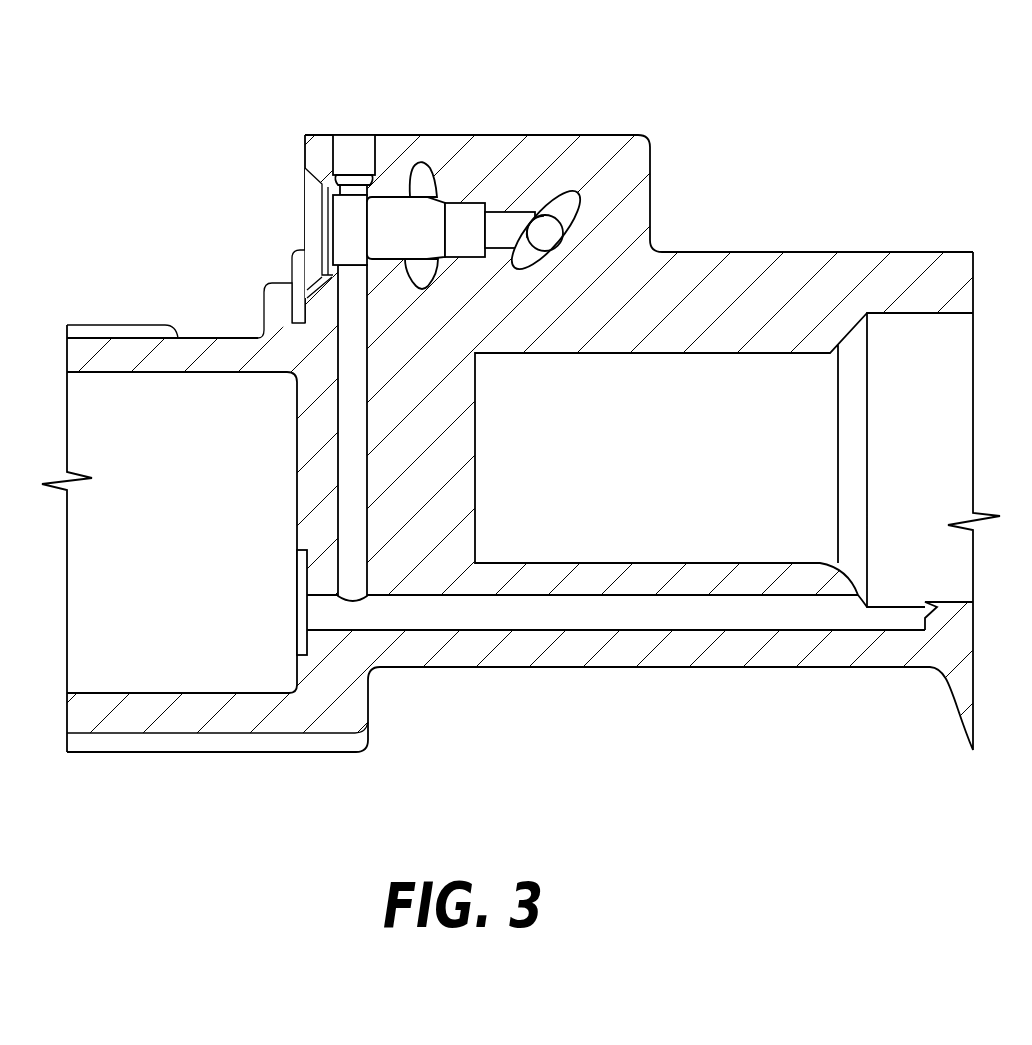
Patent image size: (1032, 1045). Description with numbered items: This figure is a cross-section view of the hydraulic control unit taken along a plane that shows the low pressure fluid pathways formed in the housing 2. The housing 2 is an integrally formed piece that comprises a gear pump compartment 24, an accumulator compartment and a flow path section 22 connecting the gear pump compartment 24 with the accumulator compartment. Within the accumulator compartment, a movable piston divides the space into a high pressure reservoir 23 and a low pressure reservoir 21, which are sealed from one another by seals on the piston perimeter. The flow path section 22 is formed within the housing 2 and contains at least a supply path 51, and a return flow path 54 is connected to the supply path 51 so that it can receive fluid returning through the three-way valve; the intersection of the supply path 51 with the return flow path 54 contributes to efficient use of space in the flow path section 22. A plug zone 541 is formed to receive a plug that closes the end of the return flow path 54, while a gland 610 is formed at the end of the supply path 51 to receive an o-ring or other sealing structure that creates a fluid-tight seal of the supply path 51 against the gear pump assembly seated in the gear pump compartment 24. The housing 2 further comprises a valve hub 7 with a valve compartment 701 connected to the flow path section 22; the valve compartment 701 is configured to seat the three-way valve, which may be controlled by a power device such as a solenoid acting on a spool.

The housing 2 is at (648, 136).
The valve hub 7 is at (461, 305).
The low pressure reservoir 21 is at (925, 335).
The flow path section 22 is at (615, 110).
The high pressure reservoir 23 is at (608, 375).
The gear pump compartment 24 is at (207, 693).
The supply path 51 is at (792, 630).
The return flow path 54 is at (368, 430).
The plug zone 541 is at (379, 147).
The gland 610 is at (308, 640).
The valve compartment 701 is at (452, 197).